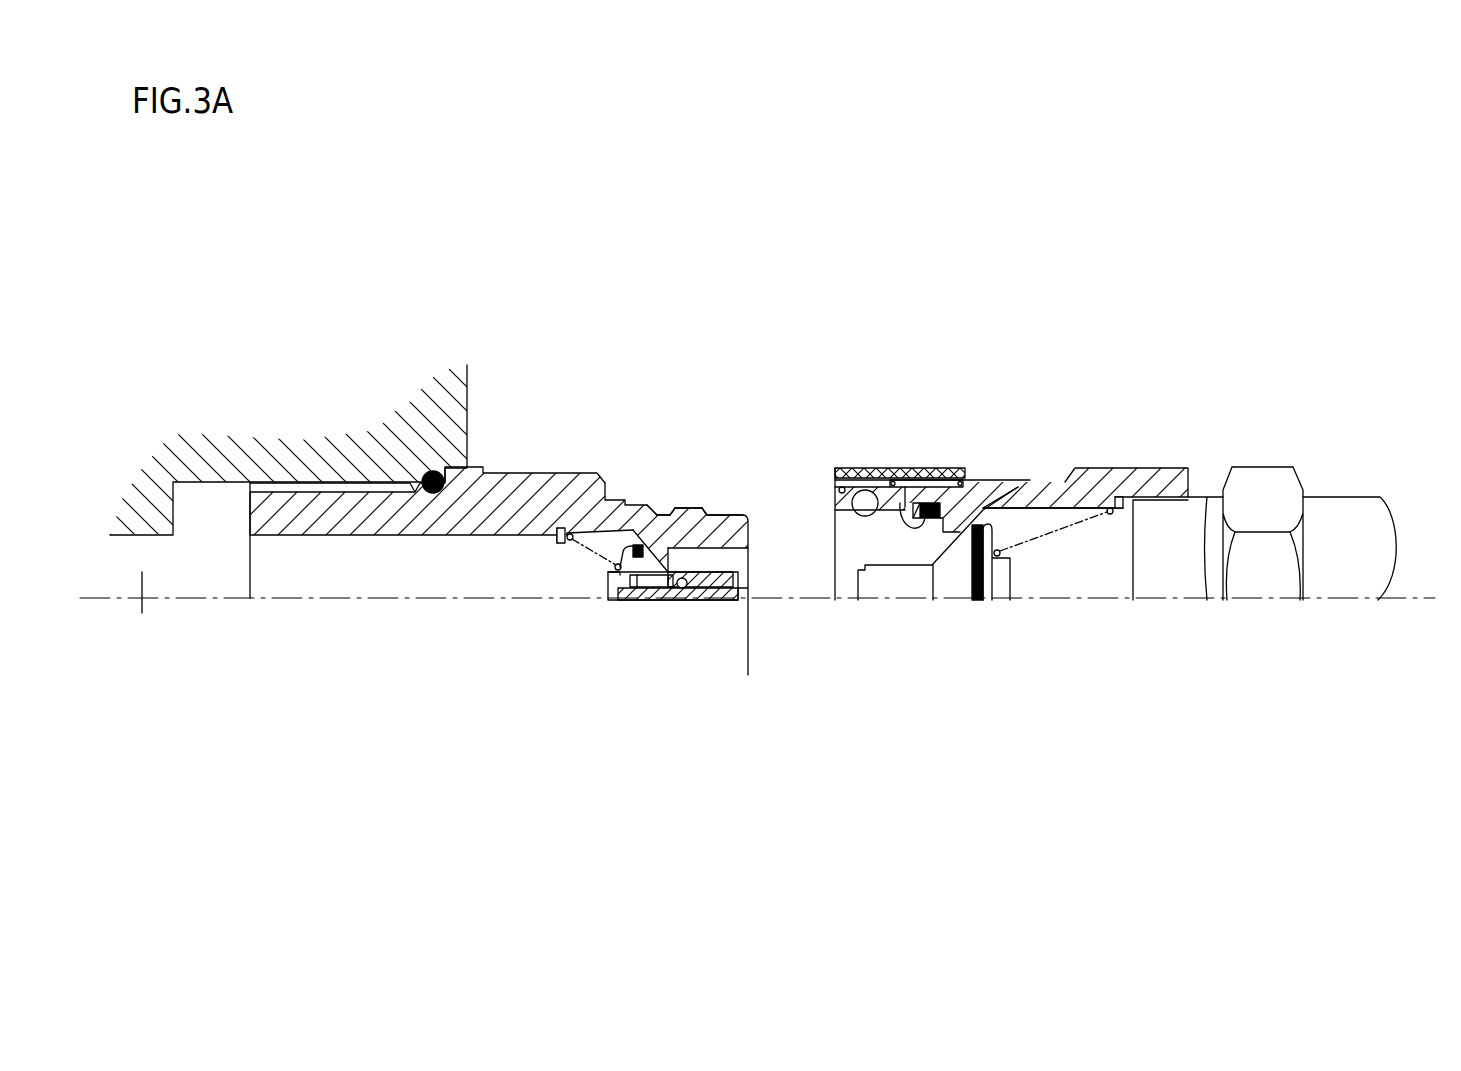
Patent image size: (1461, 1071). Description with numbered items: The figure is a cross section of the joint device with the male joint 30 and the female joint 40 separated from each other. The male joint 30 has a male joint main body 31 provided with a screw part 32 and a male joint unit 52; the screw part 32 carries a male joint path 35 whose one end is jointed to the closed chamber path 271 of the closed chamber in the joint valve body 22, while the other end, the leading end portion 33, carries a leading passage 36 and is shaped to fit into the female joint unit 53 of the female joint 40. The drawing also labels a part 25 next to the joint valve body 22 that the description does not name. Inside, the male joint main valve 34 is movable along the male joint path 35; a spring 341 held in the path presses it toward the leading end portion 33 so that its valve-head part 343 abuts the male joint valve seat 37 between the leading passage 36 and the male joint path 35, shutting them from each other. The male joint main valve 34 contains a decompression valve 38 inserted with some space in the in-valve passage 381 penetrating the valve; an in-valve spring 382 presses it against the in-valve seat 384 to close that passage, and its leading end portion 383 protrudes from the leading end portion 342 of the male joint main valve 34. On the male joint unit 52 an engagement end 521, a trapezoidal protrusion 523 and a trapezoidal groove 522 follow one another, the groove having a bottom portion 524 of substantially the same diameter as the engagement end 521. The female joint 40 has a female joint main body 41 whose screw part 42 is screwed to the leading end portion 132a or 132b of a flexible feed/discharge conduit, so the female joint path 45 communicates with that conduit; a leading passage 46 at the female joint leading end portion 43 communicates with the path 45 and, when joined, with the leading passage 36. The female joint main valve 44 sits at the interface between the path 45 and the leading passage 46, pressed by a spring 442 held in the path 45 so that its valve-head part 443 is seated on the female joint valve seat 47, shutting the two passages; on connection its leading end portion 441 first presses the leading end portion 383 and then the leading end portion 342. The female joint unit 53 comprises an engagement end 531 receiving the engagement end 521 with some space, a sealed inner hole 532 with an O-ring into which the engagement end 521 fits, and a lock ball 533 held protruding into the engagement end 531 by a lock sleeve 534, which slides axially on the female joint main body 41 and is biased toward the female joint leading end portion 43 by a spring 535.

The joint valve body 22 is at (202, 452).
The flange portion 25 is at (313, 536).
The closed chamber path 271 is at (142, 613).
The male joint 30 is at (515, 426).
The male joint main body 31 is at (367, 525).
The screw part 32 is at (300, 482).
The leading end portion 33 is at (765, 535).
The male joint main valve 34 is at (607, 573).
The spring 341 is at (572, 543).
The leading end portion 342 is at (762, 578).
The valve-head part 343 is at (620, 577).
The male joint path 35 is at (347, 550).
The leading passage 36 is at (720, 557).
The male joint valve seat 37 is at (633, 541).
The decompression valve 38 is at (683, 600).
The in-valve passage 381 is at (612, 585).
The in-valve spring 382 is at (630, 592).
The leading end portion 383 is at (747, 600).
The in-valve seat 384 is at (728, 592).
The male joint unit 52 is at (686, 423).
The engagement end 521 is at (750, 446).
The trapezoidal groove 522 is at (678, 508).
The trapezoidal protrusion 523 is at (700, 503).
The bottom portion 524 is at (658, 505).
The female joint 40 is at (1108, 430).
The female joint main body 41 is at (1155, 483).
The screw part 42 is at (1203, 592).
The female joint leading end portion 43 is at (832, 522).
The female joint main valve 44 is at (940, 583).
The leading end portion 441 is at (862, 570).
The spring 442 is at (1175, 500).
The valve-head part 443 is at (1040, 560).
The female joint path 45 is at (1088, 517).
The leading passage 46 is at (890, 533).
The female joint valve seat 47 is at (1077, 480).
The female joint unit 53 is at (949, 415).
The engagement end 531 is at (835, 518).
The sealed inner hole 532 is at (957, 470).
The lock ball 533 is at (885, 480).
The lock sleeve 534 is at (853, 480).
The spring 535 is at (994, 459).
The leading end portion of flexible feed/discharge conduit 132a is at (1362, 497).
The leading end portion of flexible feed/discharge conduit 132b is at (1349, 548).